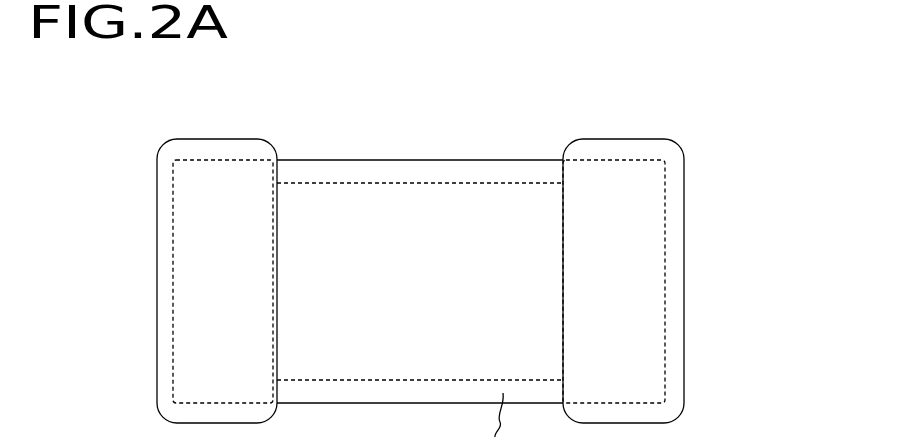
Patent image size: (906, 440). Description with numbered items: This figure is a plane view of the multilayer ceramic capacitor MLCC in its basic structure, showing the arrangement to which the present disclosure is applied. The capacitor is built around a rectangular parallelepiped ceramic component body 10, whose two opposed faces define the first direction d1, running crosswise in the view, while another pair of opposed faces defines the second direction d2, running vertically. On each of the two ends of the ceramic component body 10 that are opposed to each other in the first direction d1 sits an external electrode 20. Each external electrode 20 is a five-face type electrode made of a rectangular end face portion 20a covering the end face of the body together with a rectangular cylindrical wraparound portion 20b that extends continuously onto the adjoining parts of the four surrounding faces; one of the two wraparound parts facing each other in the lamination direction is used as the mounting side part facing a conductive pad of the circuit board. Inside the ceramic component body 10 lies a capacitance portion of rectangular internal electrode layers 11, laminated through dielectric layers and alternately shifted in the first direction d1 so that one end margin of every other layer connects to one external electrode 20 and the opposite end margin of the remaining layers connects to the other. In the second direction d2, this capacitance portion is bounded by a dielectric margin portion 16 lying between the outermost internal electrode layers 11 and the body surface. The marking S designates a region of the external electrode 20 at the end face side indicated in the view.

The multilayer ceramic capacitor MLCC is at (185, 101).
The ceramic component body 10 is at (393, 160).
The internal electrode layer 11 is at (455, 197).
The dielectric margin portion 16 is at (506, 165).
The external electrode 20 is at (157, 238).
The end face portion 20a is at (419, 281).
The wraparound portion 20b is at (219, 139).
The end surface S is at (152, 283).
The first direction d1 is at (693, 142).
The second direction d2 is at (710, 149).